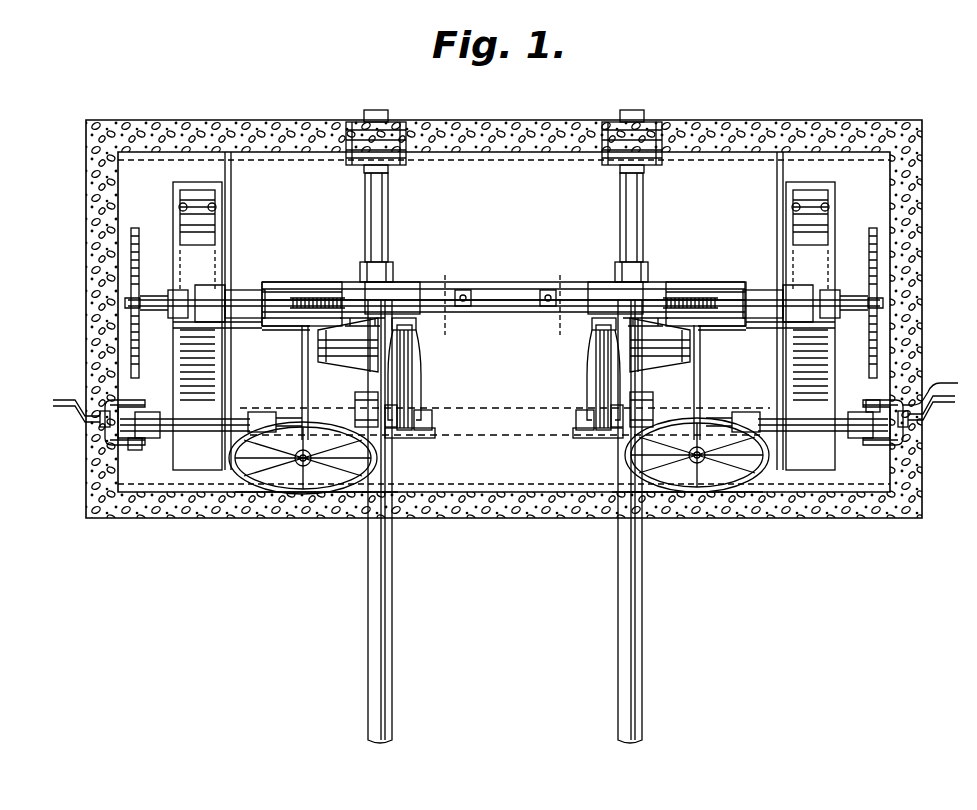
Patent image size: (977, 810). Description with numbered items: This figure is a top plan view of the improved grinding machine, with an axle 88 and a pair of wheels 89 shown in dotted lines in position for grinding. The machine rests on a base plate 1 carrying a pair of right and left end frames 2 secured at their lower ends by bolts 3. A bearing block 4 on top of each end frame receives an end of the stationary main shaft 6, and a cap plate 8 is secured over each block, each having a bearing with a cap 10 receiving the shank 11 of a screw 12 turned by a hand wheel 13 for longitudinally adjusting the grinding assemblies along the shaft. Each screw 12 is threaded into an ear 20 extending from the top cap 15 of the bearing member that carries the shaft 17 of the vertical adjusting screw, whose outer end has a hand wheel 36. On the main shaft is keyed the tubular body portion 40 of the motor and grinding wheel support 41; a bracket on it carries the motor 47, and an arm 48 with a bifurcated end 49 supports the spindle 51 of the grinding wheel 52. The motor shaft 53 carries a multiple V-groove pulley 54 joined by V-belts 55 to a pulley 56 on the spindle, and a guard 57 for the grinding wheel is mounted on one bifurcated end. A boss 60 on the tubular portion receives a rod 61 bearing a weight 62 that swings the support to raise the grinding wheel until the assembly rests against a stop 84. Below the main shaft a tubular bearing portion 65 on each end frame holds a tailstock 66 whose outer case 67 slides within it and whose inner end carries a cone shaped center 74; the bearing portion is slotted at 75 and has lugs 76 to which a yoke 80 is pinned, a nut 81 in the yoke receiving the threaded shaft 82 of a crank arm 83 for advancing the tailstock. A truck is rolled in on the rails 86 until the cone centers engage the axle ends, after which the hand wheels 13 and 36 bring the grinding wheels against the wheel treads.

The base plate 1 is at (525, 500).
The end frame 2 is at (216, 226).
The bolt 3 is at (182, 455).
The bearing block 4 is at (232, 328).
The main shaft 6 is at (485, 287).
The cap plate 8 is at (208, 290).
The cap 10 is at (176, 298).
The shank 11 is at (240, 296).
The screw 12 is at (318, 297).
The hand wheel 13 is at (137, 228).
The cap 15 is at (300, 282).
The shaft 17 is at (303, 370).
The ear 20 is at (290, 328).
The hand wheel 36 is at (300, 495).
The tubular body portion 40 is at (440, 280).
The motor and grinding wheel support 41 is at (352, 318).
The motor 47 is at (348, 364).
The arm 48 is at (416, 325).
The bifurcated end 49 is at (400, 438).
The spindle 51 is at (420, 412).
The grinding wheel 52 is at (355, 408).
The motor shaft 53 is at (413, 340).
The V-groove pulley 54 is at (412, 356).
The V-belt 55 is at (405, 385).
The V-groove pulley 56 is at (432, 420).
The guard 57 is at (342, 463).
The boss 60 is at (393, 270).
The rod 61 is at (386, 218).
The weight 62 is at (400, 125).
The tubular bearing portion 65 is at (165, 418).
The tailstock 66 is at (264, 414).
The outer case 67 is at (294, 456).
The cone shaped center 74 is at (288, 418).
The slot 75 is at (136, 450).
The lug 76 is at (115, 405).
The yoke 80 is at (110, 440).
The nut 81 is at (102, 420).
The shaft 82 is at (948, 388).
The crank arm 83 is at (66, 404).
The stop 84 is at (540, 306).
The rail 86 is at (385, 630).
The axle 88 is at (505, 437).
The wheel 89 is at (393, 480).